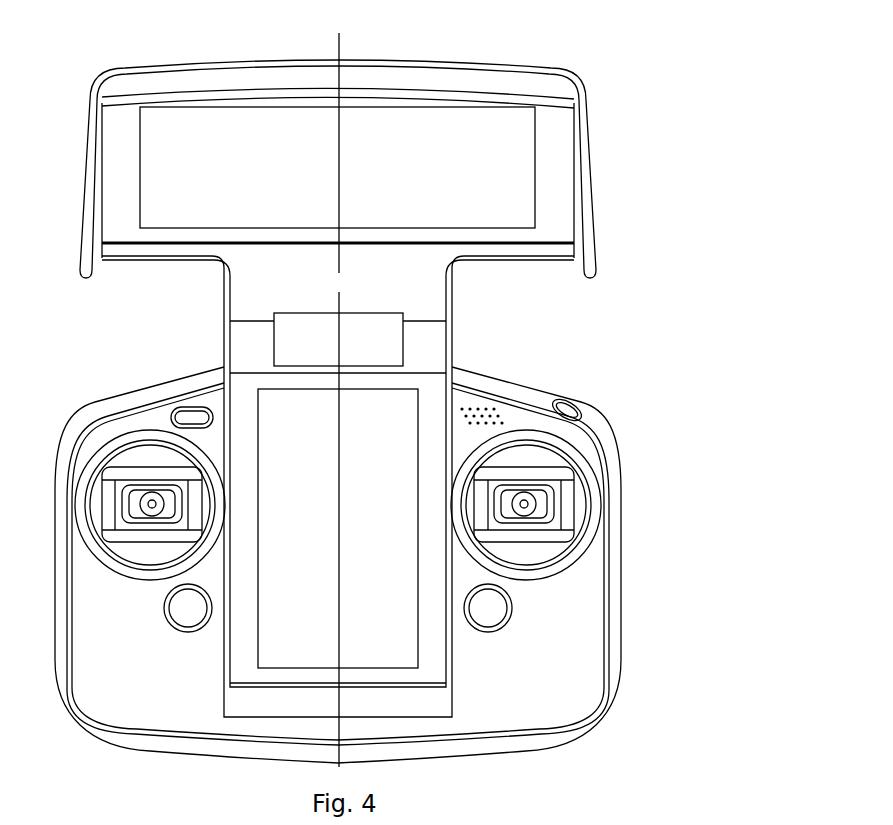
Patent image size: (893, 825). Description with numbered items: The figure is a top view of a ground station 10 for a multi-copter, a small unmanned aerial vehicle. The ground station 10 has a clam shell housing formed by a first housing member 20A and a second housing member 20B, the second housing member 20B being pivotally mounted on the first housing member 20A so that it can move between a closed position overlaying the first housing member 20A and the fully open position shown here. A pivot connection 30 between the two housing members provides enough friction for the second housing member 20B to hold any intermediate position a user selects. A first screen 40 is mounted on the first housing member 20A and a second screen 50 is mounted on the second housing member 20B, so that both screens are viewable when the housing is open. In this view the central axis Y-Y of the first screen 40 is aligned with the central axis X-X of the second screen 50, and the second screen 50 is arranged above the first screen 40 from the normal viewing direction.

The ground station 10 is at (690, 319).
The first housing member 20A is at (623, 582).
The second housing member 20B is at (590, 170).
The pivot connection 30 is at (385, 343).
The first screen 40 is at (390, 534).
The second screen 50 is at (447, 171).